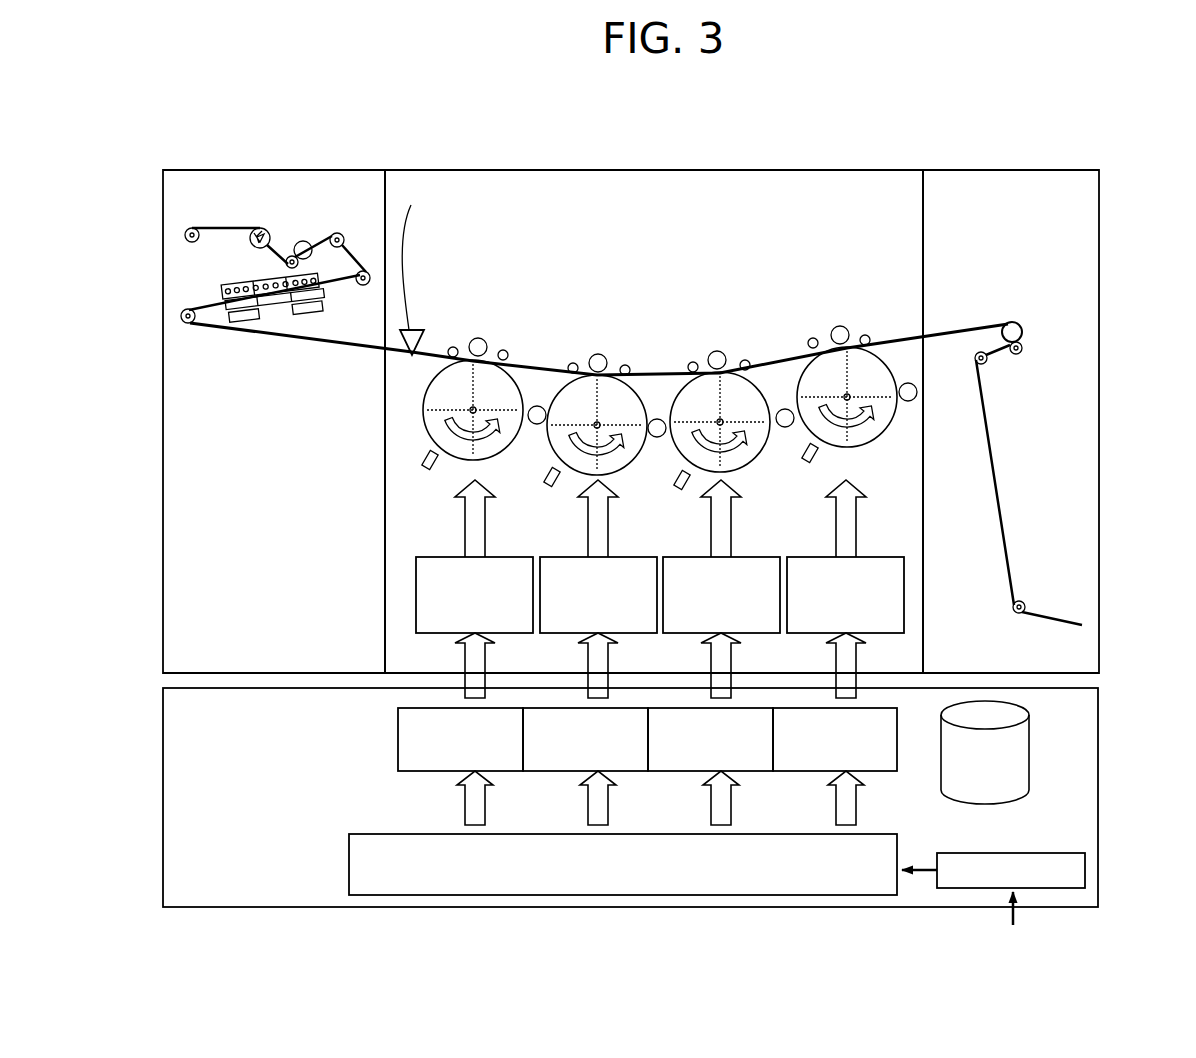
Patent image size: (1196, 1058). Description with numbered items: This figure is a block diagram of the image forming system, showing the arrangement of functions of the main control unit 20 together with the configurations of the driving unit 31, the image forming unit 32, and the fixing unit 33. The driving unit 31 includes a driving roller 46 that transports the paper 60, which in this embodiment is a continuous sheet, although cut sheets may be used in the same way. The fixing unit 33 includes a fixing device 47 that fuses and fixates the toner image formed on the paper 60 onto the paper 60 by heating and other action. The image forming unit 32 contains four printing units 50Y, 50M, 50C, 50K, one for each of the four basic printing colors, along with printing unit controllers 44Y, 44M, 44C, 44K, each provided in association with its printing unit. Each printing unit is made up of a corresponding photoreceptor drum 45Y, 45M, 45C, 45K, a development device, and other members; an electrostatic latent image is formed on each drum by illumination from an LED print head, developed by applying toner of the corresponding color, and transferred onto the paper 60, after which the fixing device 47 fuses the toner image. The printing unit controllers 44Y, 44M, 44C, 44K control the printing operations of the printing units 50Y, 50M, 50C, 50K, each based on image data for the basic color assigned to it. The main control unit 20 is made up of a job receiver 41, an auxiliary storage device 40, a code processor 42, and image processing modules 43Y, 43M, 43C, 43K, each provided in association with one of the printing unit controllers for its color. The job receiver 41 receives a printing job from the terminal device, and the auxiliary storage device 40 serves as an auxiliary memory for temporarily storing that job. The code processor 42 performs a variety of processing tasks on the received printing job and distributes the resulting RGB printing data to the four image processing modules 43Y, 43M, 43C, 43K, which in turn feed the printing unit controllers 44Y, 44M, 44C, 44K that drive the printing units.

The main control unit 20 is at (1100, 812).
The driving unit 31 is at (940, 175).
The image forming unit 32 is at (580, 172).
The fixing unit 33 is at (190, 172).
The auxiliary storage device 40 is at (1030, 766).
The job receiver 41 is at (958, 853).
The code processor 42 is at (349, 862).
The image processing module 43K is at (500, 772).
The image processing module 43C is at (628, 772).
The image processing module 43M is at (745, 772).
The image processing module 43Y is at (868, 772).
The printing unit controller 44K is at (506, 556).
The printing unit controller 44C is at (630, 556).
The printing unit controller 44M is at (753, 556).
The printing unit controller 44Y is at (875, 556).
The photoreceptor drum 45K is at (498, 454).
The photoreceptor drum 45C is at (622, 469).
The photoreceptor drum 45M is at (745, 466).
The photoreceptor drum 45Y is at (872, 441).
The driving roller 46 is at (1024, 322).
The fixing device 47 is at (262, 310).
The printing unit 50K is at (487, 330).
The printing unit 50C is at (605, 343).
The printing unit 50M is at (733, 338).
The printing unit 50Y is at (840, 300).
The paper 60 is at (997, 487).